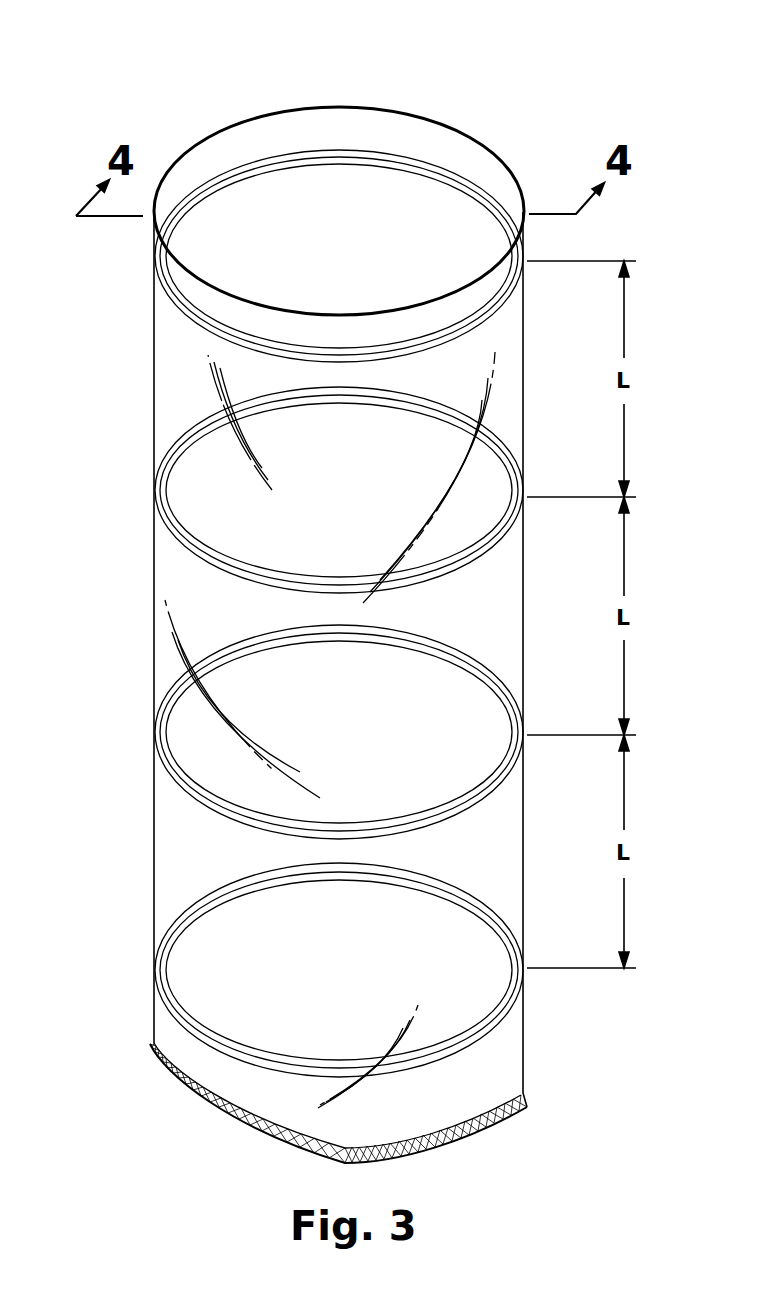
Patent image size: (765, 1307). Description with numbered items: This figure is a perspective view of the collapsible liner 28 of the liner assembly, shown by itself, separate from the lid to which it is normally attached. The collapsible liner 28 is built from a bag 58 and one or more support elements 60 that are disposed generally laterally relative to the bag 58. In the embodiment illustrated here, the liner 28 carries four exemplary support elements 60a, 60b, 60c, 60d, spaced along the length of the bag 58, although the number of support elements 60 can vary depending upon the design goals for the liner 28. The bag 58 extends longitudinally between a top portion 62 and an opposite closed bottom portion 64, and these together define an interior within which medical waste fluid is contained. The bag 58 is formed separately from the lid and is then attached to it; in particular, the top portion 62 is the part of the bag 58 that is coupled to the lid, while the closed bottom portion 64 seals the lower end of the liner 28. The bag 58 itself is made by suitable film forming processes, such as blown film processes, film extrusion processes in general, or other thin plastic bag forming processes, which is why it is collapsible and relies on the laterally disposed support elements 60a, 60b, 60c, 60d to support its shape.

The collapsible liner 28 is at (620, 68).
The bag 58 is at (162, 652).
The support elements 60 is at (205, 412).
The support element 60a is at (258, 348).
The support element 60b is at (231, 580).
The support element 60c is at (216, 810).
The support element 60d is at (257, 1062).
The top portion 62 is at (358, 106).
The closed bottom portion 64 is at (257, 1140).